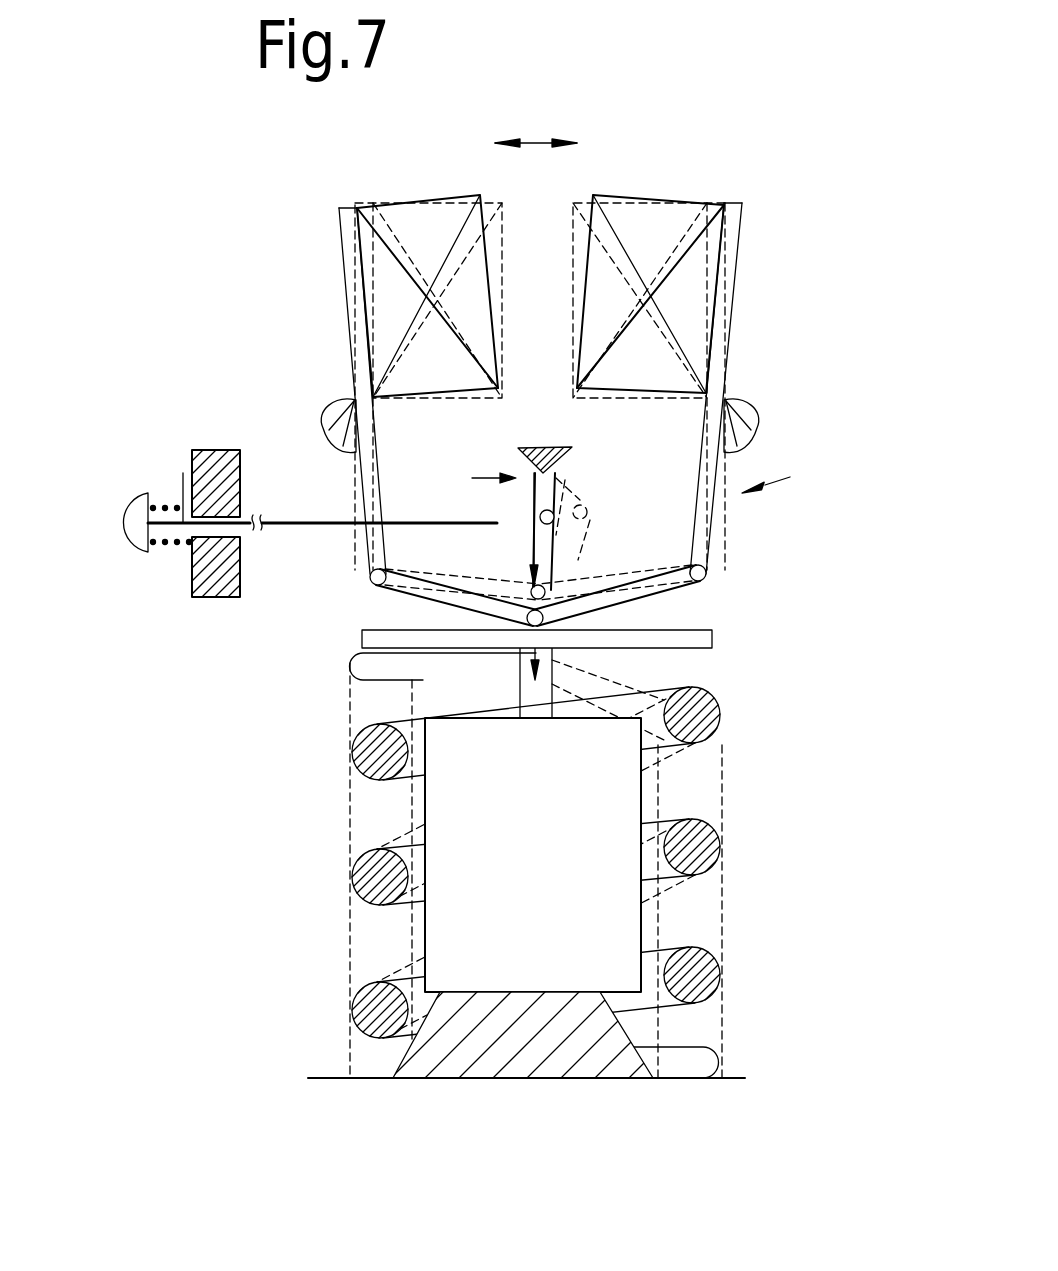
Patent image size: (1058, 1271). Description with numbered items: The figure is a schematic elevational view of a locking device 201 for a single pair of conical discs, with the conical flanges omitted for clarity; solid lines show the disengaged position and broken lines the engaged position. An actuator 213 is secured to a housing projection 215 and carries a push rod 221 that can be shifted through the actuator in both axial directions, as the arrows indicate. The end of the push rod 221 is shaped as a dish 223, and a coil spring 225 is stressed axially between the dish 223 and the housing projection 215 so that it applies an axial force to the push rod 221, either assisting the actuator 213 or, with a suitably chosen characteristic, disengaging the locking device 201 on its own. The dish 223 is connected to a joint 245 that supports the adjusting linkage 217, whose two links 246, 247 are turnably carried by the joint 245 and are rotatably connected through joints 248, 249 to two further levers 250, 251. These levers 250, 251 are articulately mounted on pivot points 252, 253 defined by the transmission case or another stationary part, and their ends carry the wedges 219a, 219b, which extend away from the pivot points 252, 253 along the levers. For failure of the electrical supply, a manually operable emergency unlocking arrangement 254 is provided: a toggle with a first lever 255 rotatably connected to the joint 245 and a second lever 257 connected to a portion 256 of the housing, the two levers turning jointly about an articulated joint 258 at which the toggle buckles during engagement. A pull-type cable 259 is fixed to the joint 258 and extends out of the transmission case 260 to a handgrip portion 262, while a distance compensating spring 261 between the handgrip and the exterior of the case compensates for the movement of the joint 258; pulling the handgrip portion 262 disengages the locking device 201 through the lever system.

The locking device 201 is at (684, 113).
The actuator 213 is at (521, 857).
The housing projection 215 is at (510, 1067).
The adjusting linkage 217 is at (797, 473).
The wedge 219a is at (427, 382).
The wedge 219b is at (640, 355).
The push rod 221 is at (682, 683).
The dish 223 is at (700, 635).
The coil spring 225 is at (712, 848).
The joint 245 is at (712, 605).
The link 246 is at (447, 600).
The link 247 is at (632, 590).
The joint 248 is at (707, 569).
The joint 249 is at (369, 582).
The lever 250 is at (728, 275).
The lever 251 is at (350, 273).
The pivot point 252 is at (738, 418).
The pivot point 253 is at (337, 432).
The emergency unlocking arrangement 254 is at (457, 475).
The first lever 255 is at (543, 547).
The portion of the housing 256 is at (536, 447).
The second lever 257 is at (476, 539).
The articulated joint 258 is at (556, 505).
The pull-type cable 259 is at (327, 523).
The transmission case 260 is at (222, 477).
The distance compensating spring 261 is at (163, 543).
The handgrip portion 262 is at (128, 512).